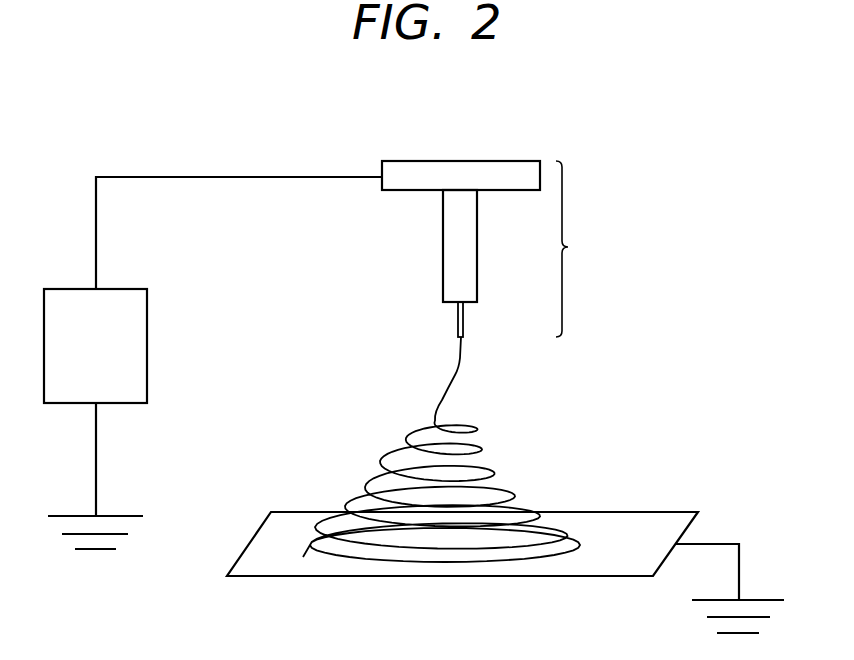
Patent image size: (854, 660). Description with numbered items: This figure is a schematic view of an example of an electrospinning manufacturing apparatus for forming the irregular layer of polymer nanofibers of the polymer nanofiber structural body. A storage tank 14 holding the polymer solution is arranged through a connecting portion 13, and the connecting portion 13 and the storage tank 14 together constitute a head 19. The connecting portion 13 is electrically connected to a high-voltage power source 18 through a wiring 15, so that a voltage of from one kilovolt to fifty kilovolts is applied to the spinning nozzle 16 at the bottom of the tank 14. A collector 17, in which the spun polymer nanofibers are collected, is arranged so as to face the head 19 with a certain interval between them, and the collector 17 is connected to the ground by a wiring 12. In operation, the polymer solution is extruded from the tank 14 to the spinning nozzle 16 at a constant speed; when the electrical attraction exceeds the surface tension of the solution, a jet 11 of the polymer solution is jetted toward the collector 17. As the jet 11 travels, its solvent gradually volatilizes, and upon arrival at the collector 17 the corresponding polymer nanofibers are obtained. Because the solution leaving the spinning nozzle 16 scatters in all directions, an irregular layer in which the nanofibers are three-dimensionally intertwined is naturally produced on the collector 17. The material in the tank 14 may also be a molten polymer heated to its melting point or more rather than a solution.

The jet 11 is at (455, 376).
The wiring 12 is at (740, 562).
The connecting portion 13 is at (481, 160).
The storage tank 14 is at (473, 253).
The wiring 15 is at (246, 175).
The spinning nozzle 16 is at (464, 324).
The collector 17 is at (625, 511).
The high-voltage power source 18 is at (147, 335).
The head 19 is at (577, 249).